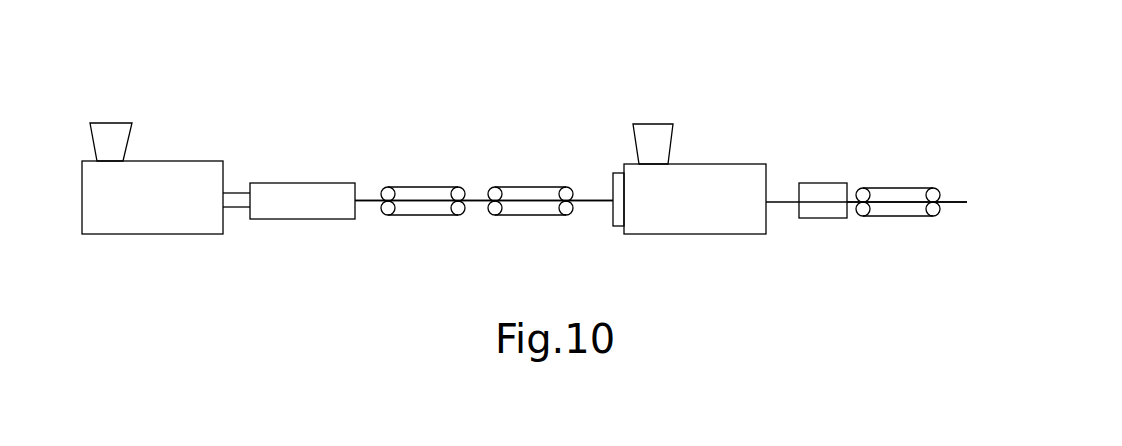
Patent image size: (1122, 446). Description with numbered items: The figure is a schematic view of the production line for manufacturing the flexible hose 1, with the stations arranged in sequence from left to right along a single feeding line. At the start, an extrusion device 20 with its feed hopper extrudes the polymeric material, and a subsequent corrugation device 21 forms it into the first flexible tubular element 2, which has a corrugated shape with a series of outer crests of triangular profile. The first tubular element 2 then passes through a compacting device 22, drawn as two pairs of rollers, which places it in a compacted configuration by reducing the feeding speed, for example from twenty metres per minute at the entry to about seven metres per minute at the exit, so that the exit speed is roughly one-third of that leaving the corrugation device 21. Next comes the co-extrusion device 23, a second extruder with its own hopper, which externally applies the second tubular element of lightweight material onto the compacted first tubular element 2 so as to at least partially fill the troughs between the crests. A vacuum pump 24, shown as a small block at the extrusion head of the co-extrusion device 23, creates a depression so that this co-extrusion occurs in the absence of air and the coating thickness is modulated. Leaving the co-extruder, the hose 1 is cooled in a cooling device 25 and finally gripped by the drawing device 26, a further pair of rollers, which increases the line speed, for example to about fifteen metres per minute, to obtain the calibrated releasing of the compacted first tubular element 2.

The extrusion device 20 is at (168, 161).
The corrugation device 21 is at (305, 183).
The compacting device 22 is at (473, 168).
The first flexible tubular element 2 is at (373, 199).
The vacuum pump 24 is at (616, 177).
The co-extrusion device 23 is at (712, 163).
The cooling device 25 is at (826, 183).
The flexible hose 1 is at (852, 197).
The drawing device 26 is at (902, 170).